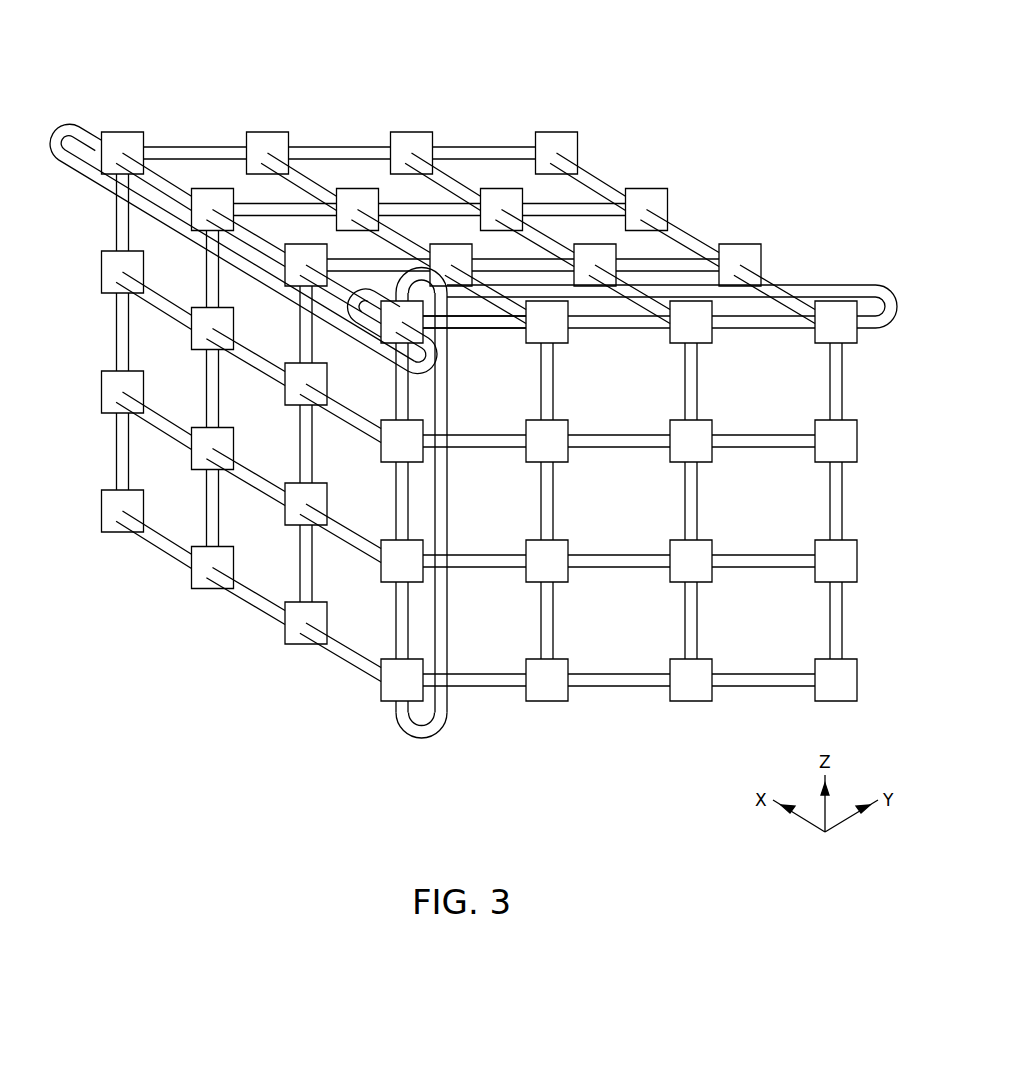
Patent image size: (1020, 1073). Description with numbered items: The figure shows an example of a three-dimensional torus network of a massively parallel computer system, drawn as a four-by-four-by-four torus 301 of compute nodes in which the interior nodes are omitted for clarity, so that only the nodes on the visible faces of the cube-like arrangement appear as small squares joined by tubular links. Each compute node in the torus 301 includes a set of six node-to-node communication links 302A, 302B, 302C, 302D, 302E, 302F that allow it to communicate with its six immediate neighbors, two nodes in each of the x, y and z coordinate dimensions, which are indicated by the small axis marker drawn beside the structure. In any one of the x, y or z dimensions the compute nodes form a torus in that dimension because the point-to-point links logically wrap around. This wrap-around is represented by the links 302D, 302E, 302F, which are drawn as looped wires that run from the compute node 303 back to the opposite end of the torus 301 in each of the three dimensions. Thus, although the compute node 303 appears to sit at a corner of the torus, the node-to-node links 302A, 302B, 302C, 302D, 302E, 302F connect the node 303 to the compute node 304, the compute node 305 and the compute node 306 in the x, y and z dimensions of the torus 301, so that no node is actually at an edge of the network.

The torus 301 is at (623, 67).
The node-to-node communication link 302A is at (472, 329).
The node-to-node communication link 302B is at (413, 401).
The node-to-node communication link 302C is at (347, 284).
The node-to-node communication link 302D is at (852, 284).
The node-to-node communication link 302E is at (420, 738).
The node-to-node communication link 302F is at (65, 128).
The compute node 303 is at (365, 342).
The compute node 304 is at (123, 133).
The compute node 305 is at (838, 331).
The compute node 306 is at (393, 686).